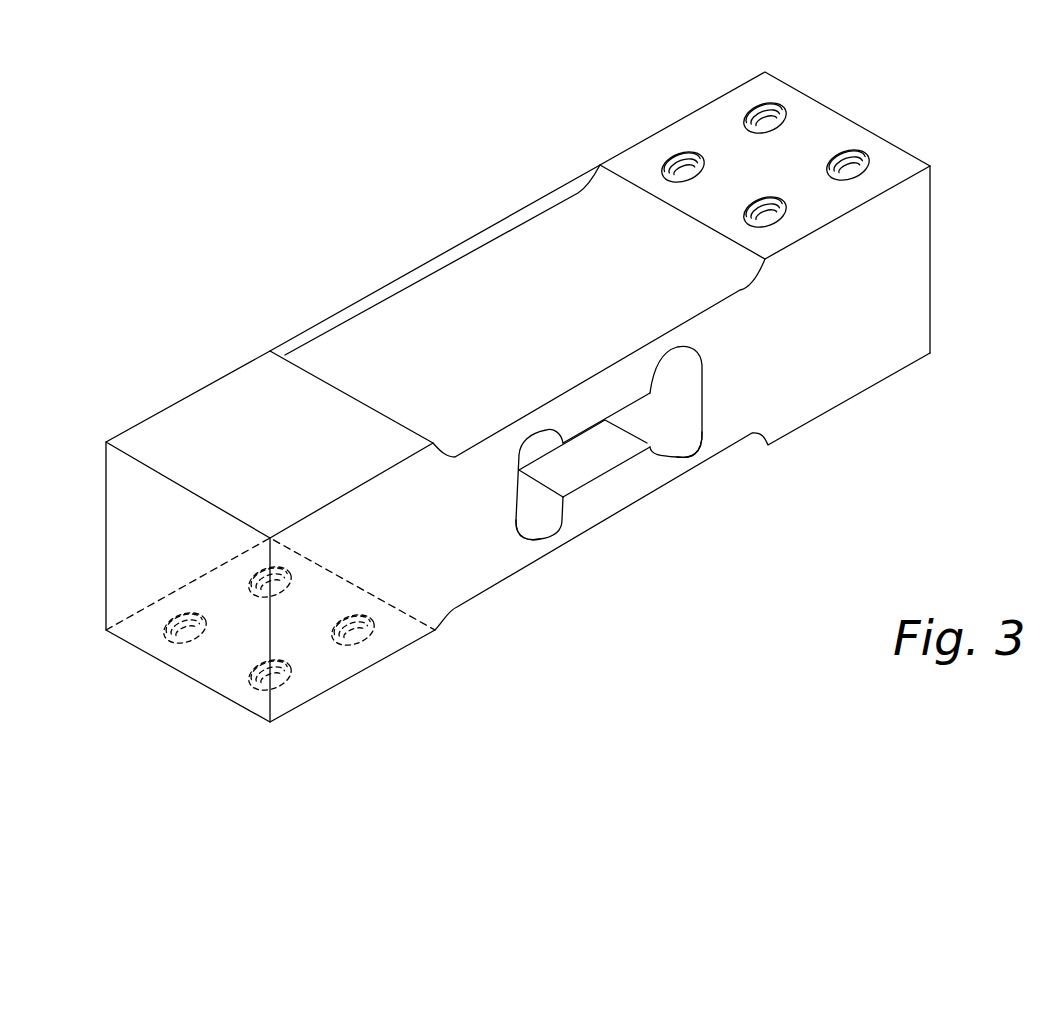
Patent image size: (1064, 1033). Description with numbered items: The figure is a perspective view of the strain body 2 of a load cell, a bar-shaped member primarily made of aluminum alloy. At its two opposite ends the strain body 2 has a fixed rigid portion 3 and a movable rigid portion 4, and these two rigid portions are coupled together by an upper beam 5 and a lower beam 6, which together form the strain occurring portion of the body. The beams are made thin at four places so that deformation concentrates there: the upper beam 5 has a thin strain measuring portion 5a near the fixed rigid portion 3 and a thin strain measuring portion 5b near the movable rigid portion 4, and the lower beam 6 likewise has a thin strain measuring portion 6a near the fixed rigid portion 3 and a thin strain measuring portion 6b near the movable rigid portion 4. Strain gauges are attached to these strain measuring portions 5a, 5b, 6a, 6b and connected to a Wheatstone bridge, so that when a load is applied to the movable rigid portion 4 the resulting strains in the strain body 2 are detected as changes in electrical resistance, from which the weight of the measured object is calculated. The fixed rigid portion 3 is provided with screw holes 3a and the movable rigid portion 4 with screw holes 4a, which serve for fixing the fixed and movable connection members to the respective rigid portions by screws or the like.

The strain body 2 is at (578, 416).
The fixed rigid portion 3 is at (365, 652).
The screw hole 3a is at (183, 633).
The movable rigid portion 4 is at (908, 304).
The screw hole 4a is at (687, 160).
The upper beam 5 is at (636, 446).
The strain measuring portion 5a is at (527, 426).
The strain measuring portion 5b is at (667, 340).
The lower beam 6 is at (633, 487).
The strain measuring portion 6a is at (548, 541).
The strain measuring portion 6b is at (702, 455).